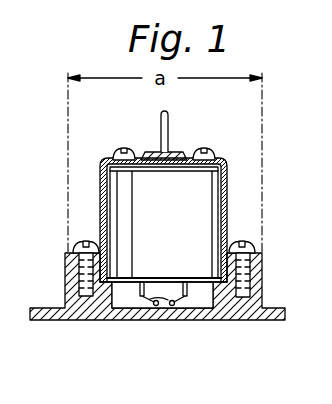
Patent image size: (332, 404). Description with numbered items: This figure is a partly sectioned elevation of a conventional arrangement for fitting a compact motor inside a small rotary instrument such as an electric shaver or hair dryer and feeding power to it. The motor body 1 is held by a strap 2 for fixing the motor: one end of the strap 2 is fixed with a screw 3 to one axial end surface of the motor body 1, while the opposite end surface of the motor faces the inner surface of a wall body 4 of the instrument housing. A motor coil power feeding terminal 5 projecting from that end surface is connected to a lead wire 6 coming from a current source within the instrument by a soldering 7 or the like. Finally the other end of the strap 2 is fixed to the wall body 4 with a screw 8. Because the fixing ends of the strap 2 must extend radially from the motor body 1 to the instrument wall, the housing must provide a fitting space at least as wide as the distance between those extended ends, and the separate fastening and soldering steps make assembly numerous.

The motor body 1 is at (208, 200).
The strap 2 is at (224, 161).
The screw 3 is at (202, 152).
The wall body 4 is at (256, 312).
The motor coil power feeding terminal 5 is at (186, 292).
The lead wire 6 is at (165, 305).
The soldering 7 is at (182, 306).
The screw 8 is at (256, 243).